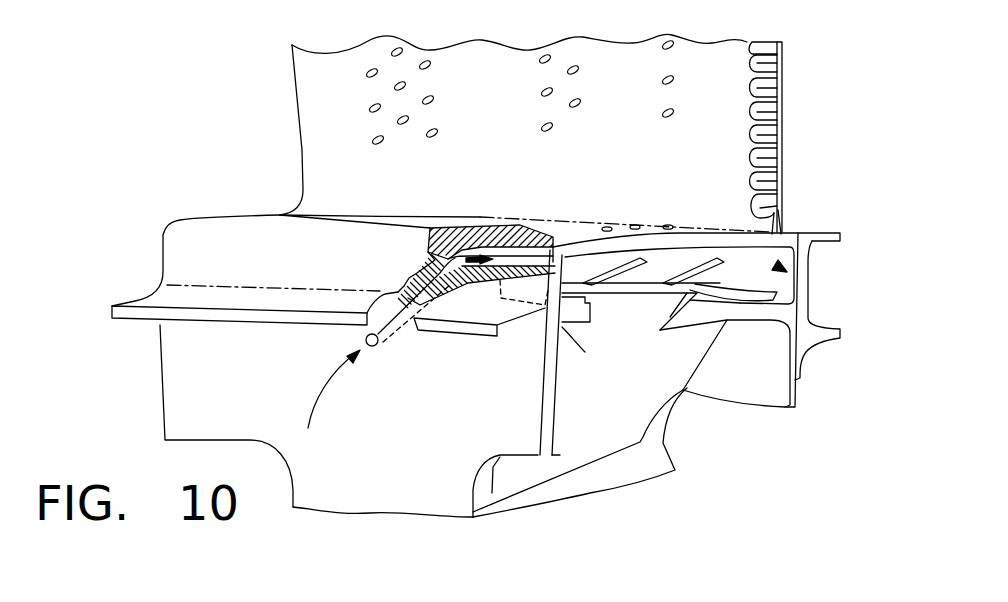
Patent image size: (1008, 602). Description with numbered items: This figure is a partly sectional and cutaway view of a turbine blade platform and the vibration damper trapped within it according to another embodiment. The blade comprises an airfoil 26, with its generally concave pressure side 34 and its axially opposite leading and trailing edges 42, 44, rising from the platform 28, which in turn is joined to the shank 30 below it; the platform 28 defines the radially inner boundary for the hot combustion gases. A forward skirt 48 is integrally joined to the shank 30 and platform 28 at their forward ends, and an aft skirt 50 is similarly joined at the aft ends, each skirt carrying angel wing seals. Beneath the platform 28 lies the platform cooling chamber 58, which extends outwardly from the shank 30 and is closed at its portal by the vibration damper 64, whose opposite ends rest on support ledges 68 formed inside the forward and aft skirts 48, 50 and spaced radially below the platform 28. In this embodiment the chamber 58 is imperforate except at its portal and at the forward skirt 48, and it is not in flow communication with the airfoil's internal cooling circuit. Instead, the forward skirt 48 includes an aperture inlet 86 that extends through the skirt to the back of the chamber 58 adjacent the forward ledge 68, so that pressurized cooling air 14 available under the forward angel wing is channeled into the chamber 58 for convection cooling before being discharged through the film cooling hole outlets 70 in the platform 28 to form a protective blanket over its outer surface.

The pressurized cooling air 14 is at (315, 405).
The airfoil 26 is at (717, 42).
The platform 28 is at (233, 210).
The shank 30 is at (590, 410).
The pressure side 34 is at (485, 120).
The leading edge 42 is at (292, 112).
The trailing edge 44 is at (784, 85).
The forward skirt 48 is at (215, 388).
The aft skirt 50 is at (735, 385).
The platform cooling chamber 58 is at (537, 244).
The vibration damper 64 is at (784, 266).
The support ledges 68 is at (578, 323).
The film cooling hole outlets 70 is at (605, 220).
The aperture inlet 86 is at (378, 346).